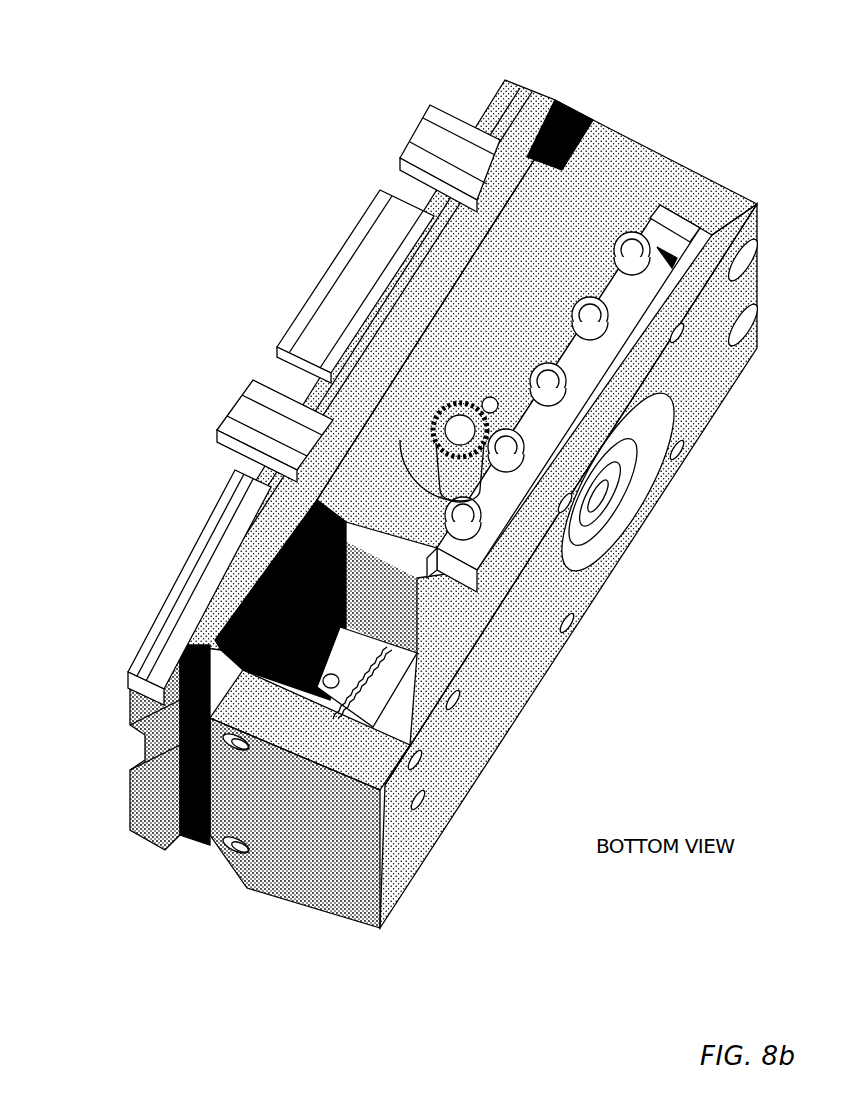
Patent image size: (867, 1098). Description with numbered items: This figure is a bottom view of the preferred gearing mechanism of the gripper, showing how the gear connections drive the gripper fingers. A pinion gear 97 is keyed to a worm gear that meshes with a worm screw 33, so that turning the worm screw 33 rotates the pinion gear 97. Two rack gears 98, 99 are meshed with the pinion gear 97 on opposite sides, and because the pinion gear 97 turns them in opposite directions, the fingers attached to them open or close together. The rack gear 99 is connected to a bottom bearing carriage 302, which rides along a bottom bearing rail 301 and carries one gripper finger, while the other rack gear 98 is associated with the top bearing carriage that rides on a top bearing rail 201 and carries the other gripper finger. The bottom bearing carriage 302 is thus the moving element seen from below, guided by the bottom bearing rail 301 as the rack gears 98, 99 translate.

The bottom bearing carriage 302 is at (585, 195).
The worm screw 33 is at (638, 240).
The rack gear 99 is at (497, 400).
The pinion gear 97 is at (435, 418).
The rack gear 98 is at (384, 667).
The bottom bearing rail 301 is at (197, 548).
The top bearing rail 201 is at (143, 808).